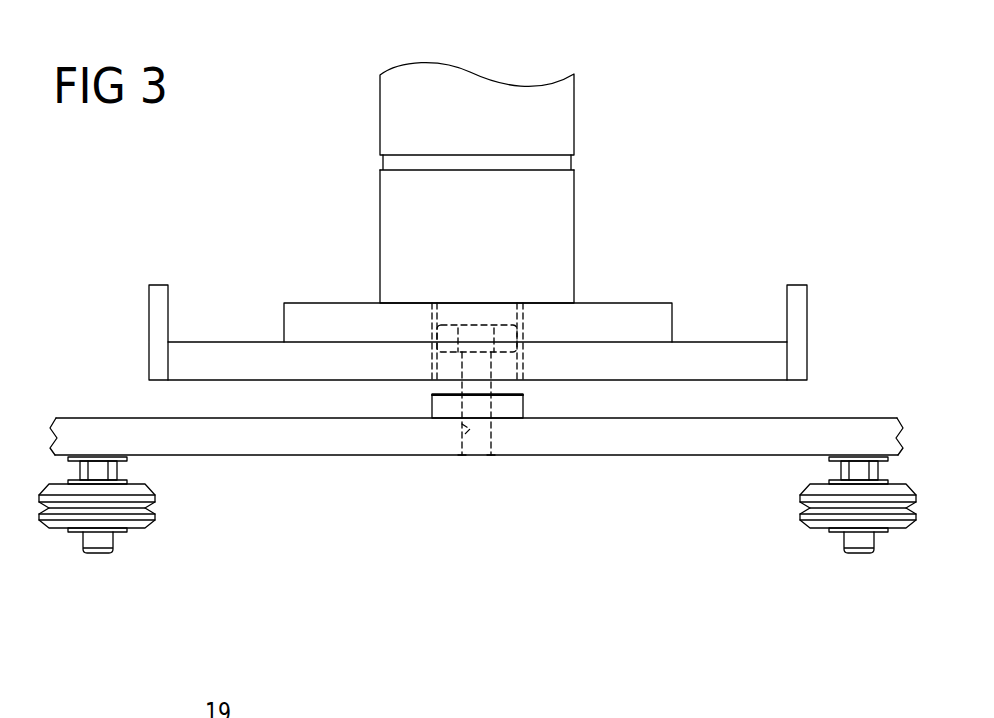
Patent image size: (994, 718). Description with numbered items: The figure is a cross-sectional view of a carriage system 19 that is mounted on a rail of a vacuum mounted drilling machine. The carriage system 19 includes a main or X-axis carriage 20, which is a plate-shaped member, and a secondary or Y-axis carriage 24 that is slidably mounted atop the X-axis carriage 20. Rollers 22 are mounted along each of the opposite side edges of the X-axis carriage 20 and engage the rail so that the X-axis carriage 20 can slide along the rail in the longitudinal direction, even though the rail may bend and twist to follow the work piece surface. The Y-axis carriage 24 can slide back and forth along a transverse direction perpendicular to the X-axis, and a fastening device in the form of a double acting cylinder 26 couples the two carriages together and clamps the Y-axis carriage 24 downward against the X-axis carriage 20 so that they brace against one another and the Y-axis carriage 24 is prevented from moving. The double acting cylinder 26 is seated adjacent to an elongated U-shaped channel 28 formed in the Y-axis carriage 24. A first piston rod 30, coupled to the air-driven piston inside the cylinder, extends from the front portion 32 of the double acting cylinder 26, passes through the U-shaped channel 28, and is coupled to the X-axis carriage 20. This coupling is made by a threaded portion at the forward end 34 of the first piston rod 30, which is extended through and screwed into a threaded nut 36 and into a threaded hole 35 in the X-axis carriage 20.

The carriage system 19 is at (239, 88).
The X-axis carriage 20 is at (123, 432).
The rollers 22 is at (146, 497).
The Y-axis carriage 24 is at (800, 331).
The double acting cylinder 26 is at (560, 126).
The U-shaped channel 28 is at (430, 369).
The first piston rod 30 is at (492, 432).
The front portion 32 is at (575, 302).
The forward end 34 is at (476, 455).
The threaded hole 35 is at (462, 437).
The threaded nut 36 is at (432, 412).